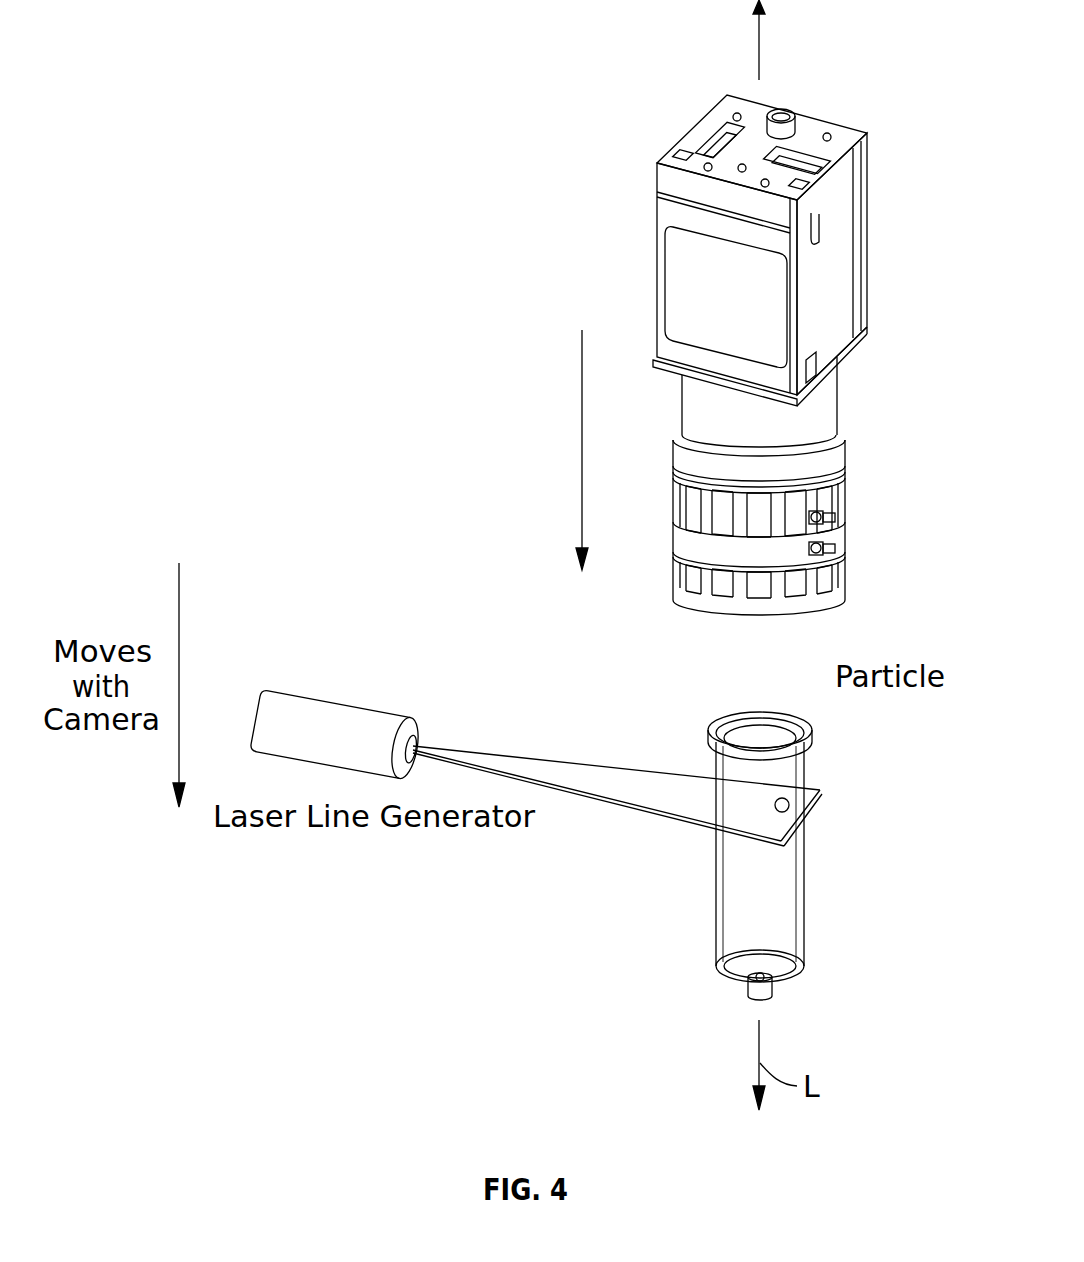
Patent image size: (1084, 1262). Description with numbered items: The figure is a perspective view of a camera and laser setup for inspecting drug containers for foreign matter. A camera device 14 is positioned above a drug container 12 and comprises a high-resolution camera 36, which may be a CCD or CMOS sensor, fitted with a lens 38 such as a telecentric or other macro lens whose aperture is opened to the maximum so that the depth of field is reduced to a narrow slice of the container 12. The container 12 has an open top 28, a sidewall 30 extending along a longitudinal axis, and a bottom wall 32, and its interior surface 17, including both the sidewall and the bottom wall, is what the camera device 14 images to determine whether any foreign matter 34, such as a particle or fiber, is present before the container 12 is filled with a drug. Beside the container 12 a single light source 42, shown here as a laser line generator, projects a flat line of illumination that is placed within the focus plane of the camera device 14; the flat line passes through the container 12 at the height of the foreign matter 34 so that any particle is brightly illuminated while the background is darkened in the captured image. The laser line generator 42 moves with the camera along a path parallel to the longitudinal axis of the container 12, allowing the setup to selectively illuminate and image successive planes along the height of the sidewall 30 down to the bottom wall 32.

The camera device 14 is at (882, 62).
The camera 36 is at (862, 273).
The lens 38 is at (845, 465).
The light source 42 is at (326, 700).
The drug container 12 is at (803, 922).
The open top 28 is at (762, 737).
The sidewall 30 is at (714, 923).
The interior surface 17 is at (783, 873).
The bottom wall 32 is at (779, 984).
The foreign matter 34 is at (808, 805).